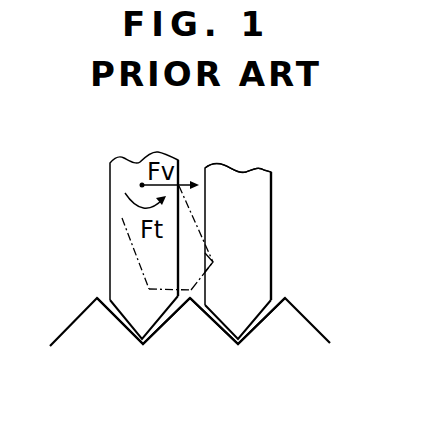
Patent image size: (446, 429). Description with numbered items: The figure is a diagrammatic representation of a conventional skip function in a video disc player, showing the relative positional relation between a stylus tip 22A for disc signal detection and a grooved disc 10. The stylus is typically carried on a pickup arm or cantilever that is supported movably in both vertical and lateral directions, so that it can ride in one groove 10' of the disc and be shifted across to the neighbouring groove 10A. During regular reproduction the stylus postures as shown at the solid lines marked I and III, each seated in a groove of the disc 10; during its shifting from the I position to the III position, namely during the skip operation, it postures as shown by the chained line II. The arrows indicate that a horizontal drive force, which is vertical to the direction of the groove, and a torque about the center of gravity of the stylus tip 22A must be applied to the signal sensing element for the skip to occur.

The grooved disc 10 is at (226, 337).
The first tooth groove of workpiece 10' is at (143, 346).
The second tooth groove of workpiece 10A is at (238, 346).
The stylus tip 22A is at (271, 193).
The stylus position during regular reproduction I is at (110, 253).
The stylus position during skip operation II is at (148, 290).
The stylus position during regular reproduction III is at (271, 255).